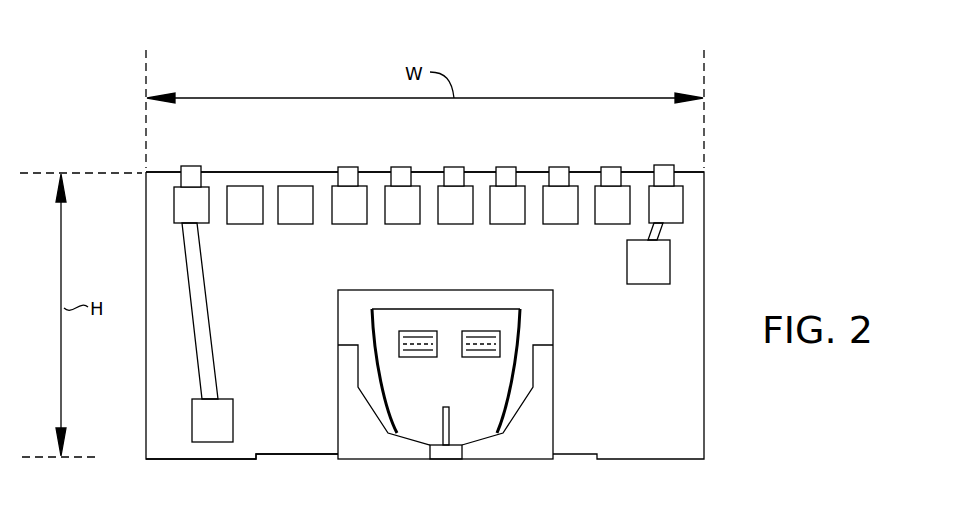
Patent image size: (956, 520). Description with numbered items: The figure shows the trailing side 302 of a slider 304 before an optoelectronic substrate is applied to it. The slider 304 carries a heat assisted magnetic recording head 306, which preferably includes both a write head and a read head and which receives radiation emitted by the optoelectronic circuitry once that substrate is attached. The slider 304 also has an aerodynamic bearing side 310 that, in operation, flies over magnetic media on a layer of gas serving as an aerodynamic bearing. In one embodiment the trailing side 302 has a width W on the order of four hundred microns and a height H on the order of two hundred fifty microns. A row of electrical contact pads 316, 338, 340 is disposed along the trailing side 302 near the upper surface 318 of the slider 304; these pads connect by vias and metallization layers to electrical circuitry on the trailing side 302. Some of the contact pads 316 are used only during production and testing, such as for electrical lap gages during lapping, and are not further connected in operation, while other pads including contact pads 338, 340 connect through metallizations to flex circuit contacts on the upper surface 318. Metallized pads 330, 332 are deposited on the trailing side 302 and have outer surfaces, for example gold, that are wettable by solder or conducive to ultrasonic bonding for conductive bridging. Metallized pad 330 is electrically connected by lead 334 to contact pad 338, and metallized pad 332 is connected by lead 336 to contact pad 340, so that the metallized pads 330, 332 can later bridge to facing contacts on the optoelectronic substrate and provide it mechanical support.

The trailing side 302 is at (287, 346).
The slider 304 is at (205, 60).
The heat assisted magnetic recording (HAMR) head 306 is at (460, 393).
The aerodynamic bearing side 310 is at (245, 478).
The electrical contact pads 316 is at (300, 205).
The upper surface 318 is at (637, 145).
The metallized pad 330 is at (670, 270).
The metallized pad 332 is at (192, 413).
The lead 334 is at (667, 233).
The lead 336 is at (195, 343).
The electrical contact pad 338 is at (683, 196).
The electrical contact pad 340 is at (174, 210).